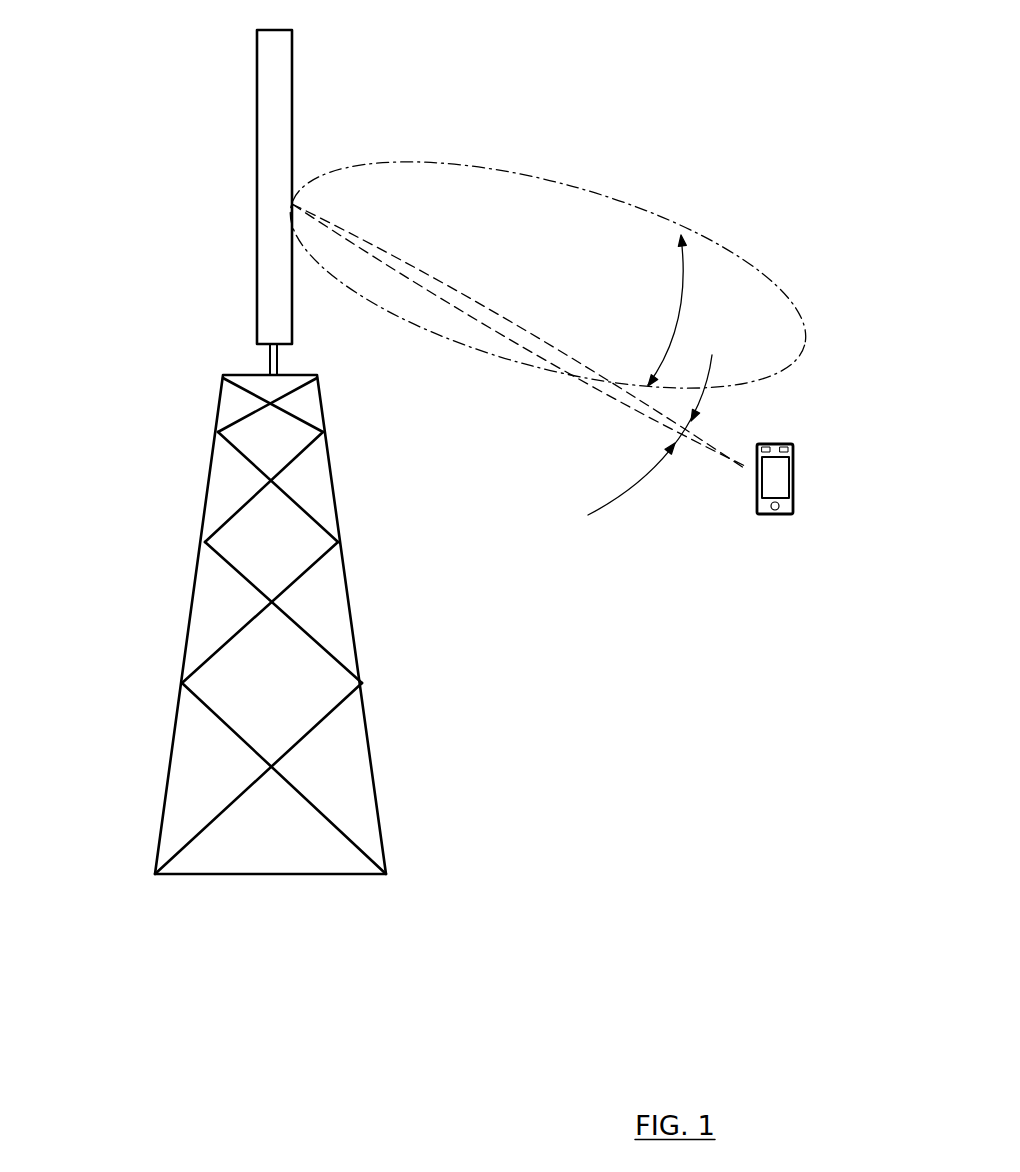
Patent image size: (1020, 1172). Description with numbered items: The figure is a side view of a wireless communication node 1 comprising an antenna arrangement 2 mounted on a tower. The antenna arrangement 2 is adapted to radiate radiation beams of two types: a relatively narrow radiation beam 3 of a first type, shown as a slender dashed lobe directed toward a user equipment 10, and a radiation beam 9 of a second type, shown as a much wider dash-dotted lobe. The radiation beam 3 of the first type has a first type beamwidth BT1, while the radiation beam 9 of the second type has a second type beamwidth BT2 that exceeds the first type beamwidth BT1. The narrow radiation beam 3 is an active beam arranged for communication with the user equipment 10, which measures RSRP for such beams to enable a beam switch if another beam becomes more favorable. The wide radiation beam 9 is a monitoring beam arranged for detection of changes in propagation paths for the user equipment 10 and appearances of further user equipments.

The wireless communication node 1 is at (197, 293).
The antenna arrangement 2 is at (270, 167).
The radiation beam of the first type 3 is at (433, 265).
The radiation beam of the second type 9 is at (647, 215).
The user equipment 10 is at (776, 485).
The first type beamwidth BT1 is at (633, 487).
The second type beamwidth BT2 is at (682, 297).